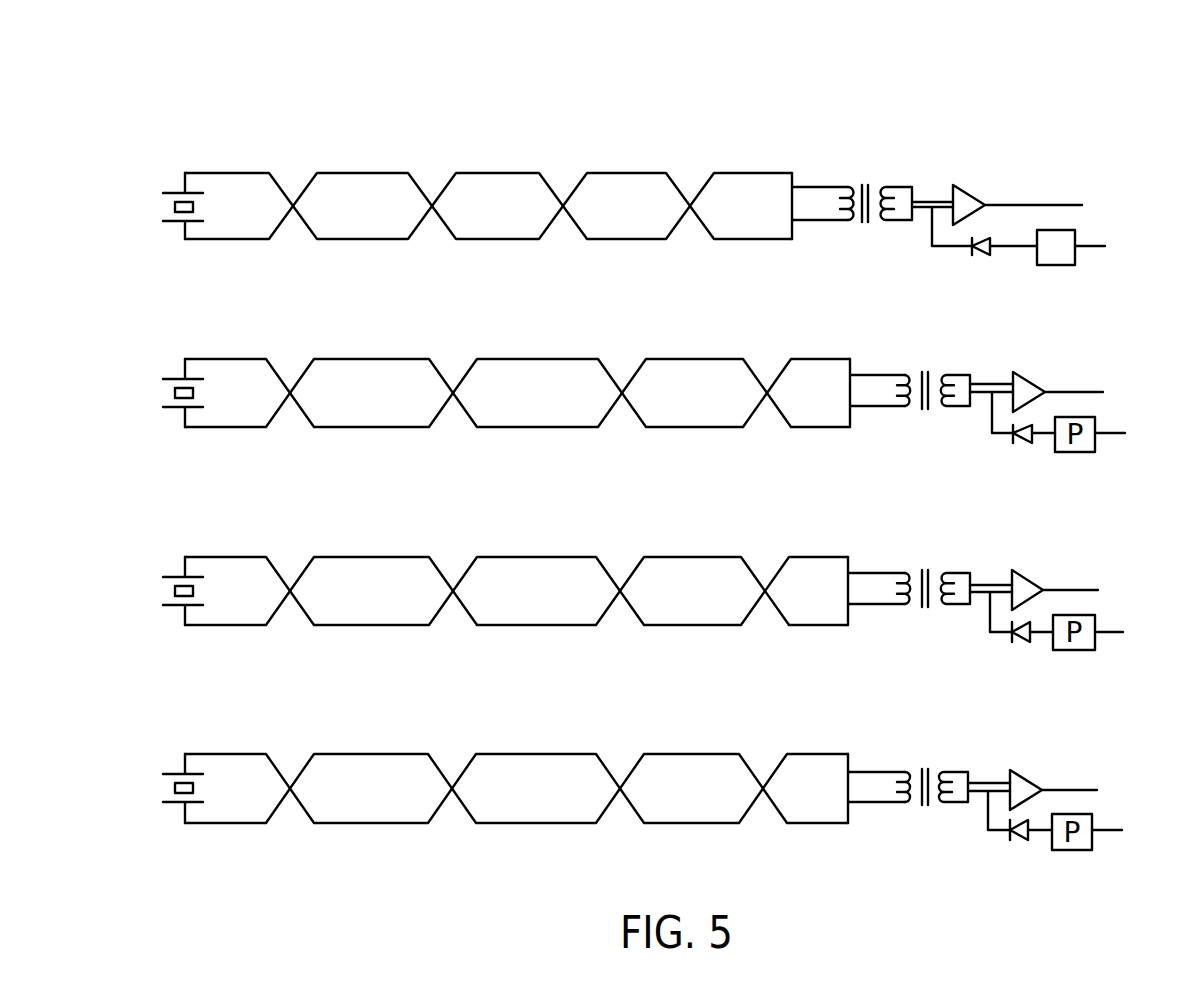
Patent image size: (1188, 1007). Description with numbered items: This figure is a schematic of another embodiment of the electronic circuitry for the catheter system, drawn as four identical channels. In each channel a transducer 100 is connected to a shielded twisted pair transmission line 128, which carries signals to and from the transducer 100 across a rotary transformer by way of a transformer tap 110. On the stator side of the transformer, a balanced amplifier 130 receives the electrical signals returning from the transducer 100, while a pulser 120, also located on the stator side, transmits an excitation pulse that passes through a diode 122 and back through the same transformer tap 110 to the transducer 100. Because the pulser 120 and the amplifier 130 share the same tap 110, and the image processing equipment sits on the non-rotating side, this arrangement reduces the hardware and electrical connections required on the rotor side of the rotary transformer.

The transducer 100 is at (140, 197).
The shielded twisted pair transmission line 128 is at (367, 173).
The transformer tap 110 is at (870, 163).
The balanced amplifier 130 is at (979, 200).
The diode 122 is at (983, 256).
The pulser 120 is at (1065, 265).